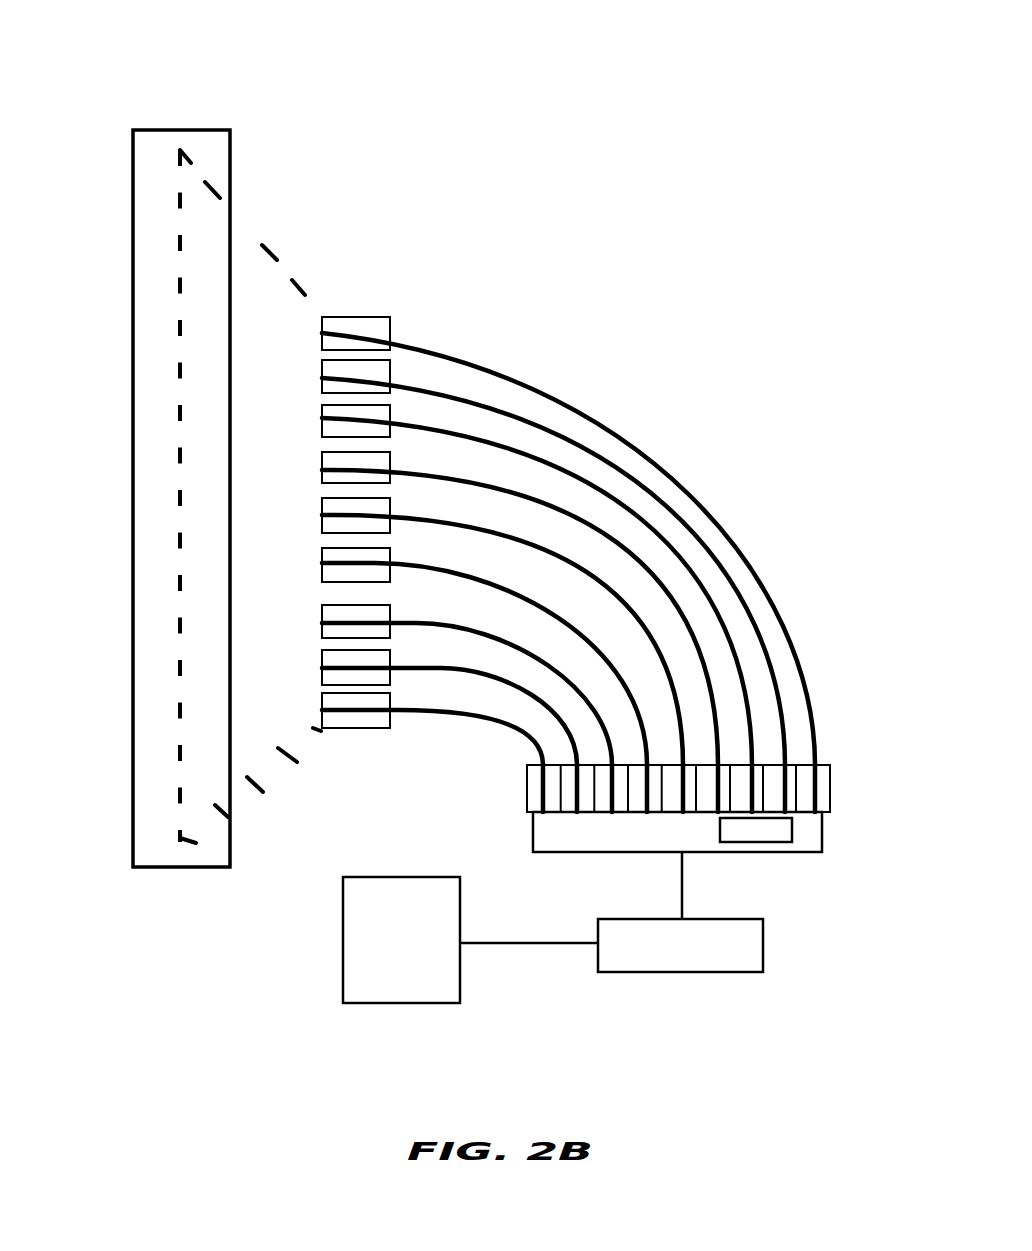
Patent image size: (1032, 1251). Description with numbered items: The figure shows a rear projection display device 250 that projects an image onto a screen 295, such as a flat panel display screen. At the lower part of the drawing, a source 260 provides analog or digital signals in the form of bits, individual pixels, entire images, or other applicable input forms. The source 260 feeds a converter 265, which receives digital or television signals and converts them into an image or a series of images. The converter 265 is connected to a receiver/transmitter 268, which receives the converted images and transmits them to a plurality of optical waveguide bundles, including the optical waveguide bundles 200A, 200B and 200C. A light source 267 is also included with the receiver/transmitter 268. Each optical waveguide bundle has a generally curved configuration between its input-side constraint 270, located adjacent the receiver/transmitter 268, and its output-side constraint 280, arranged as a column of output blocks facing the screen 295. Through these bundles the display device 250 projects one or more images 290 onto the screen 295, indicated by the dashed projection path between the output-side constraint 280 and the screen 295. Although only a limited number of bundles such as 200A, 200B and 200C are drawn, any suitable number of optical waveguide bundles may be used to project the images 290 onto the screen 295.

The rear projection display device 250 is at (508, 31).
The screen 295 is at (133, 282).
The image 290 is at (233, 216).
The output-side constraint 280 is at (370, 316).
The optical waveguide bundle 200A is at (588, 418).
The optical waveguide bundle 200B is at (620, 481).
The optical waveguide bundle 200C is at (640, 540).
The input-side constraint 270 is at (830, 785).
The receiver/transmitter 268 is at (702, 845).
The light source 267 is at (767, 843).
The converter 265 is at (706, 959).
The source 260 is at (424, 956).